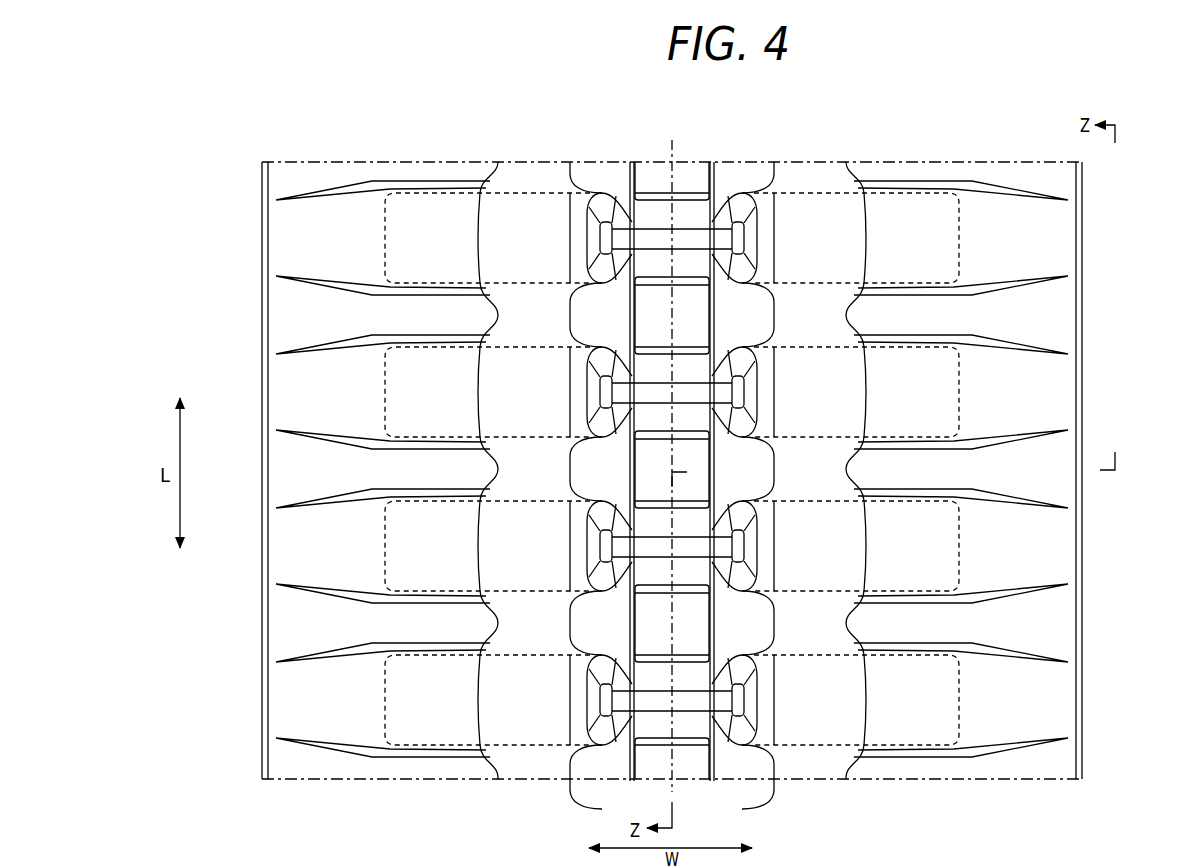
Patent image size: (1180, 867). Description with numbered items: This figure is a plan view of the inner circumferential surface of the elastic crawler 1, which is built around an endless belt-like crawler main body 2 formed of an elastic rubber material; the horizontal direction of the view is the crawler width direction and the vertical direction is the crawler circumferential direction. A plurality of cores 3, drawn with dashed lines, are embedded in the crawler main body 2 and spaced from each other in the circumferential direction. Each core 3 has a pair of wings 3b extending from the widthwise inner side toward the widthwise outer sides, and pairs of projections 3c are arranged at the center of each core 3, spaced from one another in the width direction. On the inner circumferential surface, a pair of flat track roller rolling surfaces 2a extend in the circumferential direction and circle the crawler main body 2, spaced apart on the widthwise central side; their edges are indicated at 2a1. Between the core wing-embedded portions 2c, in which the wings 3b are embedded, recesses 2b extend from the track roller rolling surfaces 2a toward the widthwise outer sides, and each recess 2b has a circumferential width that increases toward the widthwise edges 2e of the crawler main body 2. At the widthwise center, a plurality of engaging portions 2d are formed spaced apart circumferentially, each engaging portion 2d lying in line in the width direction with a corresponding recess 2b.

The elastic crawler 1 is at (1118, 273).
The crawler main body 2 is at (1080, 352).
The track roller rolling surface 2a is at (532, 183).
The wavy edge of land portion 2a1 is at (895, 703).
The recess 2b is at (340, 175).
The core wing-embedded portion 2c is at (352, 237).
The engaging portion 2d is at (687, 172).
The widthwise edge 2e is at (262, 660).
The core 3 is at (666, 469).
The wing 3b is at (386, 245).
The projection 3c is at (599, 238).